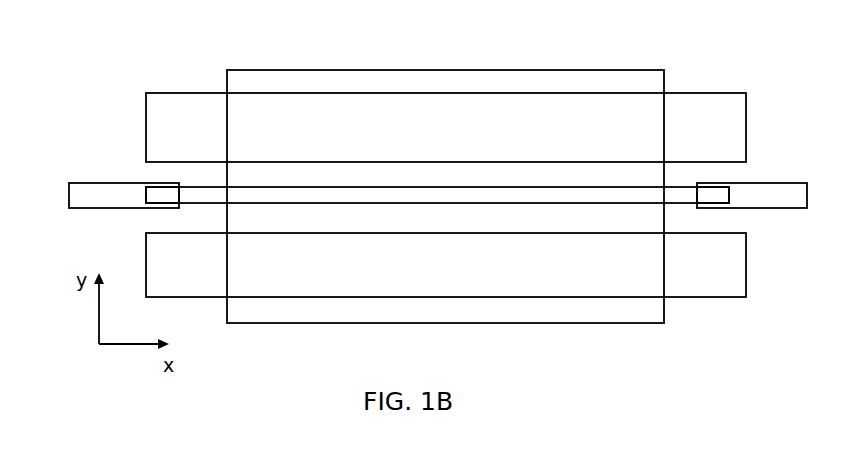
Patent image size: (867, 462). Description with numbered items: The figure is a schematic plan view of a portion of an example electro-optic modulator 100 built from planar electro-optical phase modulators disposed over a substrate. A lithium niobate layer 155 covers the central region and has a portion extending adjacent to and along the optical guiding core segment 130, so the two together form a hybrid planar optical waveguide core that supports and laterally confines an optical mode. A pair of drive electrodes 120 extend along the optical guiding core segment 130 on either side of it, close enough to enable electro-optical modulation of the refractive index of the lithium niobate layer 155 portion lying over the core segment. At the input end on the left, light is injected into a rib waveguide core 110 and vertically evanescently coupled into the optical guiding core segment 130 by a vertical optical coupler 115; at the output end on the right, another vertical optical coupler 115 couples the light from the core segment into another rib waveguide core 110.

The electro-optic modulator 100 is at (457, 42).
The rib waveguide core 110 is at (98, 183).
The vertical optical coupler 115 is at (150, 176).
The drive electrodes 120 is at (697, 93).
The optical guiding core segment 130 is at (275, 186).
The lithium niobate layer 155 is at (332, 70).